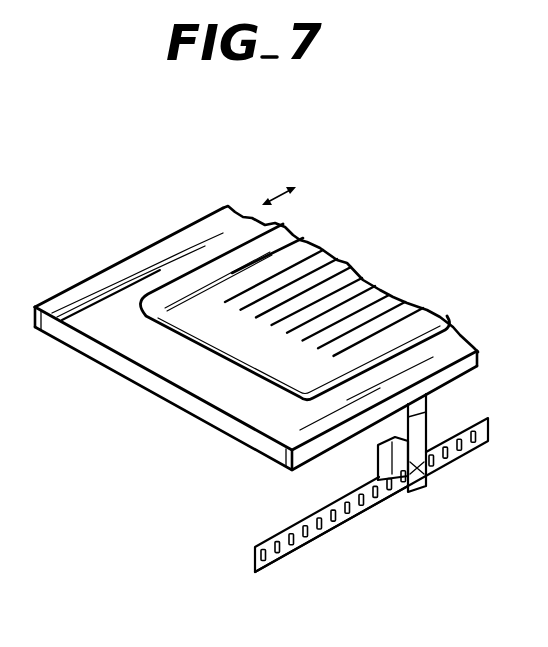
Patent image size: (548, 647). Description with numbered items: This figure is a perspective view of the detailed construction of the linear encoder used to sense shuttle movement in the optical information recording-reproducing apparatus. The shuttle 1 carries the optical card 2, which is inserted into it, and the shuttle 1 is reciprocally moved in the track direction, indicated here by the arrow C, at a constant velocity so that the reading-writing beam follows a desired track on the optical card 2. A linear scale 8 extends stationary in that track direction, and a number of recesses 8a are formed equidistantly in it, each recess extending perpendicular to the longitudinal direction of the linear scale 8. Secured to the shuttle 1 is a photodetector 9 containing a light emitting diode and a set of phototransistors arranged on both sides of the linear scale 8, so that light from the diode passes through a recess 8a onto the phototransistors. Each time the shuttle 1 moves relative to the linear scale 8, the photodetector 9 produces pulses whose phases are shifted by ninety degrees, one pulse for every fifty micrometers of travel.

The shuttle 1 is at (112, 249).
The optical card 2 is at (407, 313).
The linear scale 8 is at (310, 543).
The recesses 8a is at (350, 511).
The photodetector 9 is at (420, 487).
The direction indicator C is at (277, 187).